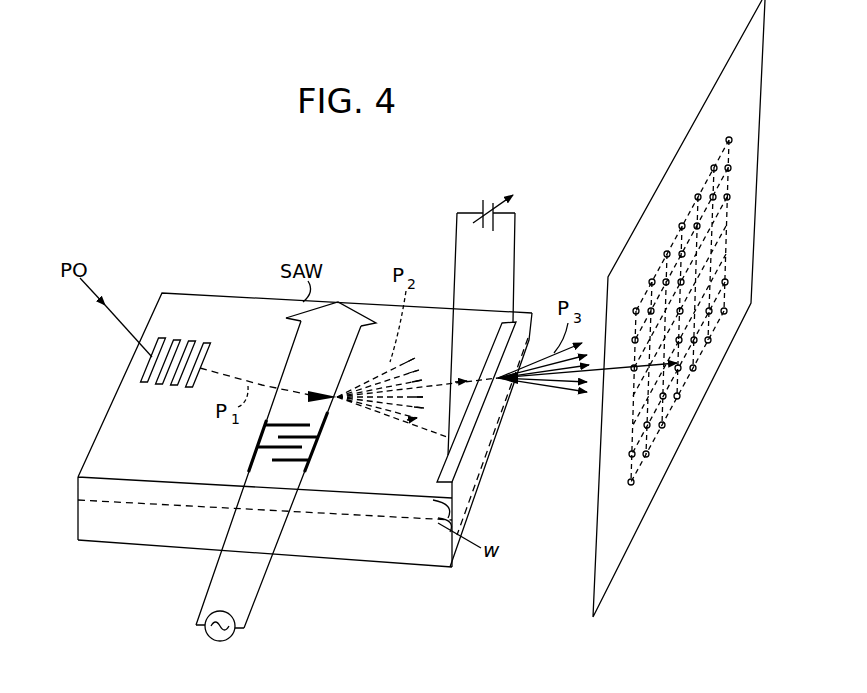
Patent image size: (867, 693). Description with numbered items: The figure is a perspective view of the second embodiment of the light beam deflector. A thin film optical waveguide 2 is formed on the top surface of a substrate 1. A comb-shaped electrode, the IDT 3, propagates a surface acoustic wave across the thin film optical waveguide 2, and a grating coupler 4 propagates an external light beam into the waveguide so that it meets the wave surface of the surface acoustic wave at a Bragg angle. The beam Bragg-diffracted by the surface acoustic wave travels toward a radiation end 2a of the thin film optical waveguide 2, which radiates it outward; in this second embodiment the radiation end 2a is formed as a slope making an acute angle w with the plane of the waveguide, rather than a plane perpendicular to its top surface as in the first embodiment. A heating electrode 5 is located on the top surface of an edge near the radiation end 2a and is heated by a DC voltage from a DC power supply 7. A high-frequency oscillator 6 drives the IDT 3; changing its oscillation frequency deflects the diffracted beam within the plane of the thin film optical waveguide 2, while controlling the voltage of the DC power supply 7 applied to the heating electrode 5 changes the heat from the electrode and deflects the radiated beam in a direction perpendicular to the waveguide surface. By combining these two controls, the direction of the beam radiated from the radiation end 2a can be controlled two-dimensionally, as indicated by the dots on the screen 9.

The substrate 1 is at (150, 542).
The thin film optical waveguide 2 is at (78, 487).
The radiation end 2a is at (492, 438).
The comb-shaped electrode (IDT: interdigital transducer) 3 is at (264, 441).
The grating coupler 4 is at (175, 338).
The heating electrode 5 is at (516, 323).
The high-frequency oscillator 6 is at (206, 638).
The DC power supply 7 is at (488, 202).
The screen 9 is at (645, 487).